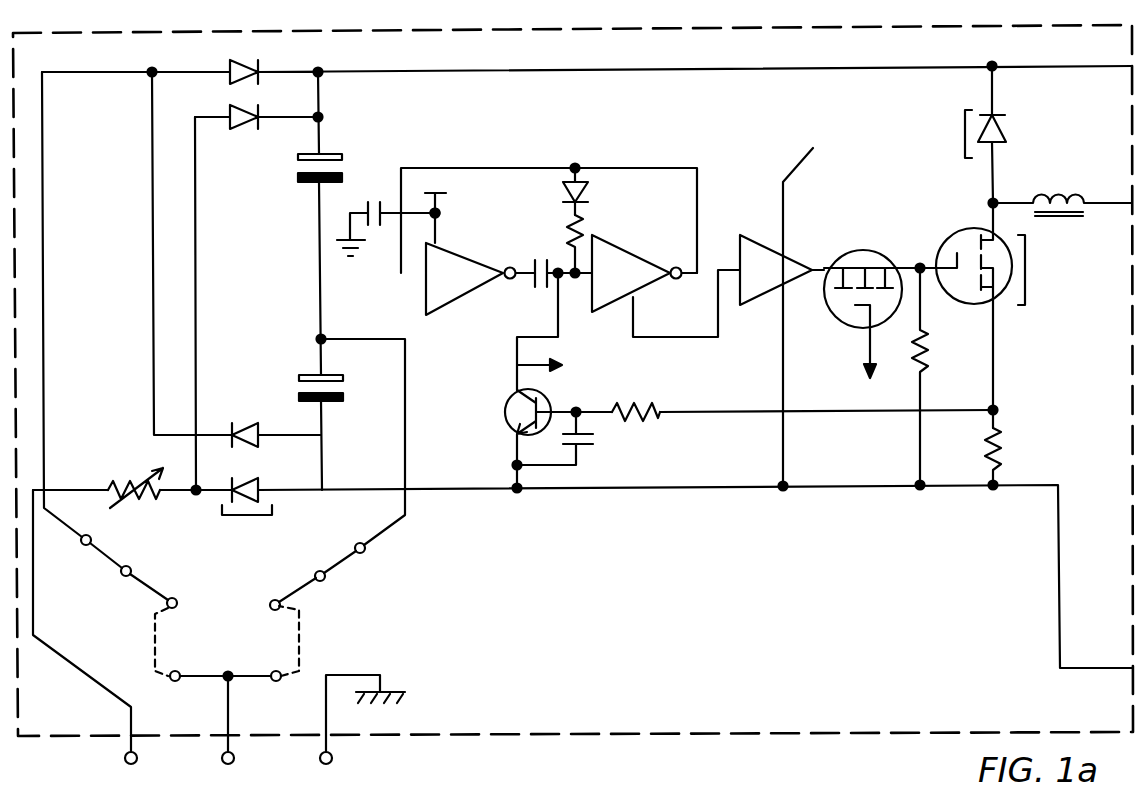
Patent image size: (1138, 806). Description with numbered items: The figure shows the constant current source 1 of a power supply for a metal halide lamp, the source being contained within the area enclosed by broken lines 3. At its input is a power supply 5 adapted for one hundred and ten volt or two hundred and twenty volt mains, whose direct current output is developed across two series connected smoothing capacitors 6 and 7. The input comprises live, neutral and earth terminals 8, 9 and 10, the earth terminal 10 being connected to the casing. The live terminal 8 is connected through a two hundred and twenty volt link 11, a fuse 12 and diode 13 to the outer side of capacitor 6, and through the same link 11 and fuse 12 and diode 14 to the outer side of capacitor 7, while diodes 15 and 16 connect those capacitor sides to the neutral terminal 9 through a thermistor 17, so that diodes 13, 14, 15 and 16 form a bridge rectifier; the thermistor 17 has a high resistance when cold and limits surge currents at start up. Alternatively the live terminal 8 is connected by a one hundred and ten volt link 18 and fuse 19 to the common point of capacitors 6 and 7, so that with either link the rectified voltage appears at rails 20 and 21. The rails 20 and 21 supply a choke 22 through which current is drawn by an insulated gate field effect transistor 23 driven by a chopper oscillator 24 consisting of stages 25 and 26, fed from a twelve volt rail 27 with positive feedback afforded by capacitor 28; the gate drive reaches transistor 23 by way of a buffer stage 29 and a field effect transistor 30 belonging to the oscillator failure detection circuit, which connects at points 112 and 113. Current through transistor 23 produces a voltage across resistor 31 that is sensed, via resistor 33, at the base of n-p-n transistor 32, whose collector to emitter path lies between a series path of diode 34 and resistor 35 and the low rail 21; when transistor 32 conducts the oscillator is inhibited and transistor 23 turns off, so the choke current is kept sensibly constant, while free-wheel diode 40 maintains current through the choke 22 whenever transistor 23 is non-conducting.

The constant current source 1 is at (684, 386).
The broken lines 3 is at (713, 732).
The power supply 5 is at (306, 609).
The smoothing capacitor 6 is at (337, 150).
The smoothing capacitor 7 is at (311, 373).
The live terminal 8 is at (234, 758).
The neutral terminal 9 is at (137, 758).
The earth terminal 10 is at (332, 758).
The 220 volt link 11 is at (152, 650).
The fuse 12 is at (110, 552).
The diode 13 is at (232, 62).
The diode 14 is at (250, 428).
The diode 15 is at (247, 128).
The diode 16 is at (262, 483).
The thermistor 17 is at (133, 475).
The 110 volt link 18 is at (303, 654).
The fuse 19 is at (347, 551).
The rail 20 is at (420, 72).
The rail 21 is at (723, 485).
The choke 22 is at (1065, 216).
The field effect transistor 23 is at (963, 232).
The chopper oscillator 24 is at (458, 207).
The stage 25 is at (638, 250).
The stage 26 is at (446, 312).
The 12 volt voltage rail 27 is at (443, 191).
The capacitor 28 is at (533, 285).
The buffer stage 29 is at (757, 236).
The field effect transistor 30 is at (862, 250).
The resistor 31 is at (1002, 448).
The n-p-n transistor 32 is at (505, 402).
The resistor 33 is at (648, 418).
The diode 34 is at (562, 192).
The resistor 35 is at (568, 232).
The free-wheel diode 40 is at (1004, 134).
The point 112 is at (535, 380).
The point 113 is at (864, 342).